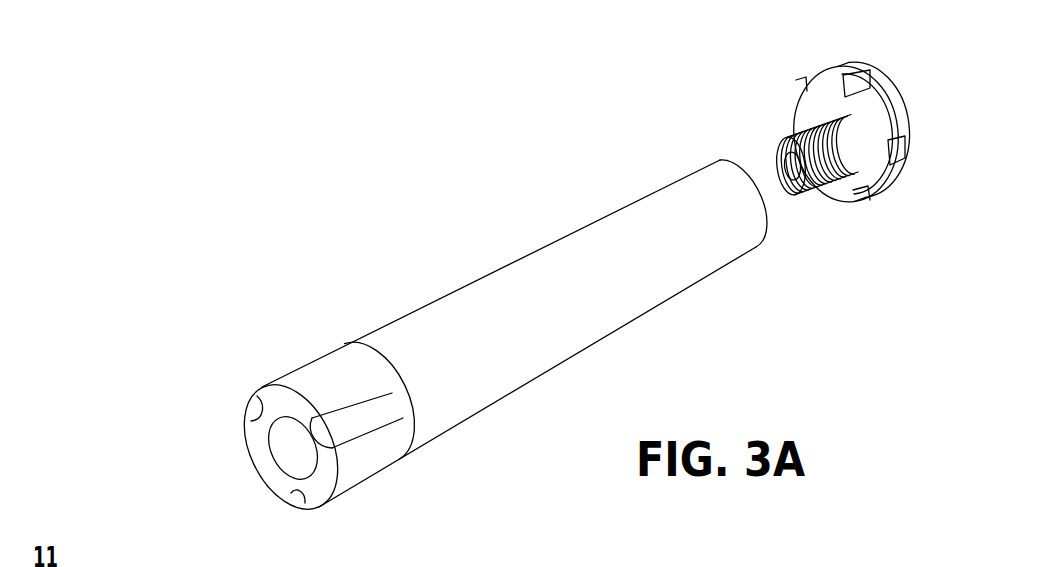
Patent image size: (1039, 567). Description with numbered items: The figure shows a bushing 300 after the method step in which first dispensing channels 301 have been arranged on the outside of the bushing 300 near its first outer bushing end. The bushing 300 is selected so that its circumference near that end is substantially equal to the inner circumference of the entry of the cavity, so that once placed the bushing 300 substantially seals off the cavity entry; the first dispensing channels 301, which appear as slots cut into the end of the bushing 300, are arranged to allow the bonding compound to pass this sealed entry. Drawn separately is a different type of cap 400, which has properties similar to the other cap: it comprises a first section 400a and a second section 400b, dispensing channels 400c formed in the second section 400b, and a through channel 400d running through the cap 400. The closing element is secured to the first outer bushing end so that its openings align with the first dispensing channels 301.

The bushing 300 is at (463, 303).
The first dispensing channels 301 is at (250, 412).
The cap 400 is at (802, 141).
The first section 400a is at (835, 167).
The second section 400b is at (892, 173).
The dispensing channels 400c is at (858, 88).
The through channel 400d is at (788, 163).